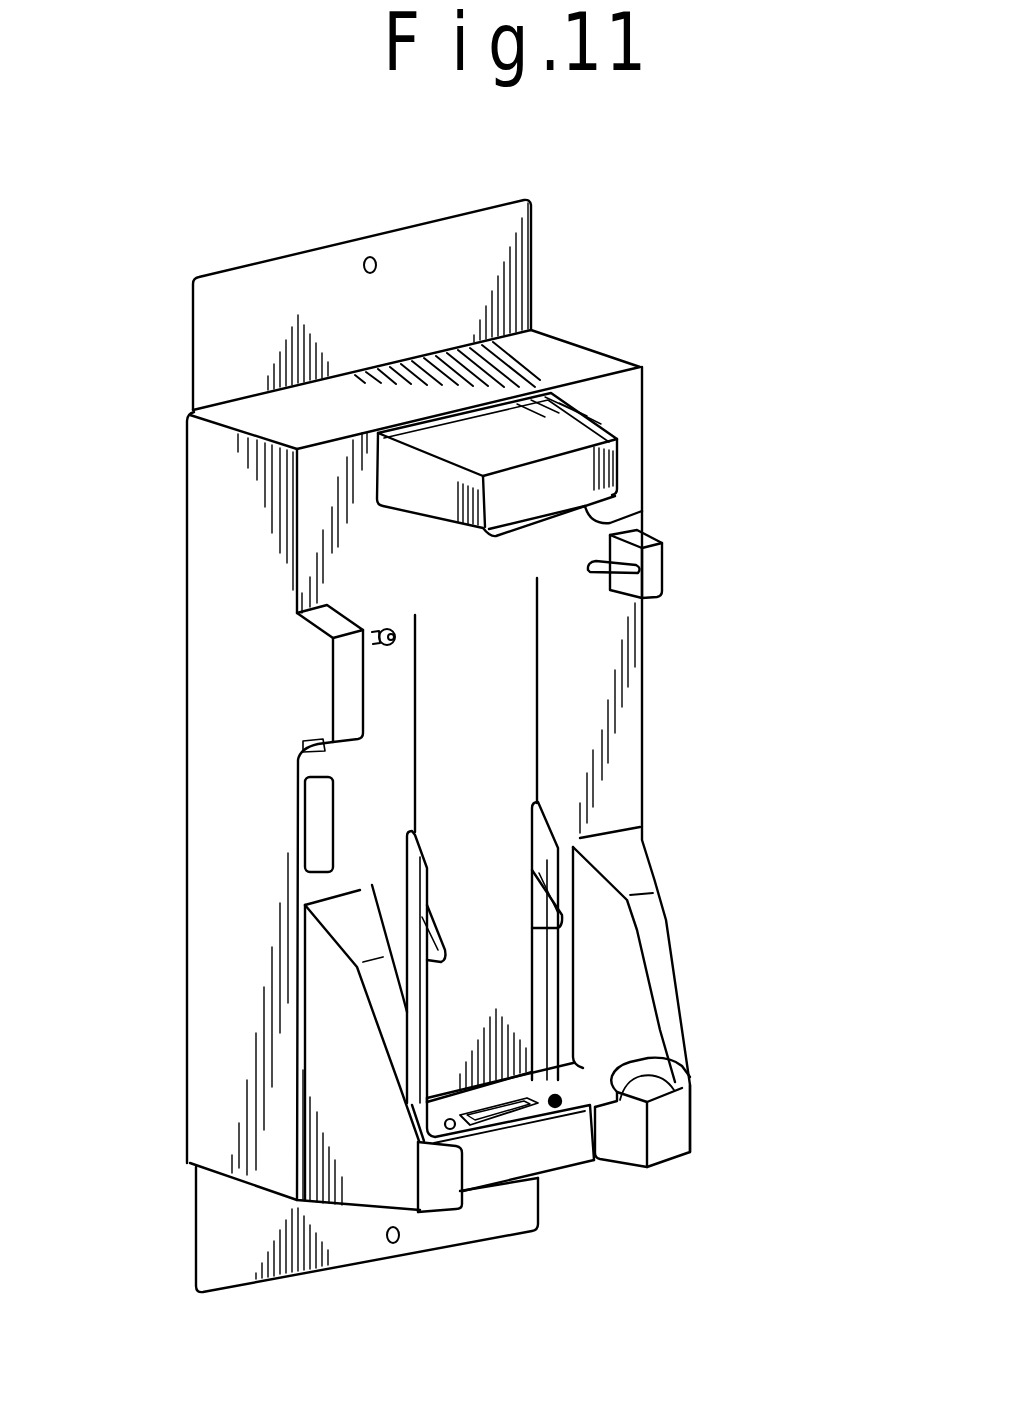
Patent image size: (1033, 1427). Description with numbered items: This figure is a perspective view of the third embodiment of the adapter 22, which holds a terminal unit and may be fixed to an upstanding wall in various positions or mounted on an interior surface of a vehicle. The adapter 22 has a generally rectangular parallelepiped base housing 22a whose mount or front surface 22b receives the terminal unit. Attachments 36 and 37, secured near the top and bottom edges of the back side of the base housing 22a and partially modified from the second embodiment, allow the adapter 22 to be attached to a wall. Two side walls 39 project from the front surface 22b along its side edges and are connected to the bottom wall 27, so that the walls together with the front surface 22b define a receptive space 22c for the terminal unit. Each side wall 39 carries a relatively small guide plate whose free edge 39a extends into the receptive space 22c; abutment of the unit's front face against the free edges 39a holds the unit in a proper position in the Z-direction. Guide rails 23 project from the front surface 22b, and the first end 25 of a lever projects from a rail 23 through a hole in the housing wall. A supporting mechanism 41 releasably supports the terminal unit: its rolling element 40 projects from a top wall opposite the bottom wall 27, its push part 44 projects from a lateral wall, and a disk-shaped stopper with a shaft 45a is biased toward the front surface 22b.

The adapter 22 is at (657, 432).
The base housing 22a is at (222, 600).
The front surface 22b is at (572, 711).
The receptive space 22c is at (550, 985).
The guide rail 23 is at (513, 1047).
The first end of lever 25 is at (543, 918).
The bottom wall 27 is at (558, 1152).
The attachment 36 is at (533, 260).
The attachment 37 is at (478, 1243).
The side wall 39 is at (660, 1040).
The free edge 39a is at (692, 1062).
The rolling element 40 is at (600, 532).
The supporting mechanism 41 is at (560, 484).
The push part 44 is at (320, 768).
The shaft 45a is at (400, 637).